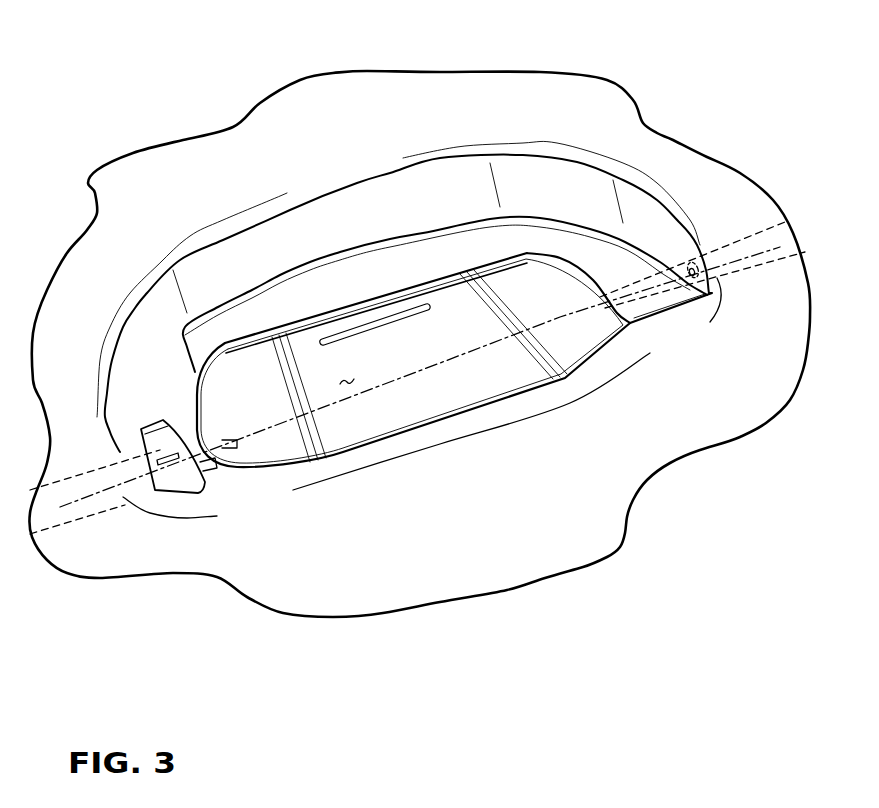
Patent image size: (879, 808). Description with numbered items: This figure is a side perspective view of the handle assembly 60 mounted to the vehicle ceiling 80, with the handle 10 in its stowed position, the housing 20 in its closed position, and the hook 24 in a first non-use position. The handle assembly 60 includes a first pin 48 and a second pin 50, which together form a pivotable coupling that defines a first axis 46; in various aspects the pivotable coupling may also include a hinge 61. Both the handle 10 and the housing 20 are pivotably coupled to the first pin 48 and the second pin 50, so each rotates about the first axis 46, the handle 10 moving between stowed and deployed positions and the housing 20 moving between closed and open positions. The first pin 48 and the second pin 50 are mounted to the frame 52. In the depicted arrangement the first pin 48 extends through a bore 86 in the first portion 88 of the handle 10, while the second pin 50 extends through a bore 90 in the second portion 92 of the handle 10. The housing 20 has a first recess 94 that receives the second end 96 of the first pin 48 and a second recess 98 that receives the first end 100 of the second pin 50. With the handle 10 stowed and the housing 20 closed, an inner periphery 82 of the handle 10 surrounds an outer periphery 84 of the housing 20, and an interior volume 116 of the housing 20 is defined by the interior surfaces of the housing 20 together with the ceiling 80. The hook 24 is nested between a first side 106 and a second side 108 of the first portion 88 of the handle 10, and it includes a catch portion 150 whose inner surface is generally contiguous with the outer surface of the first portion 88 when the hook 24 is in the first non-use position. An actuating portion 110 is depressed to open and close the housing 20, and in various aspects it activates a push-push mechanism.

The handle 10 is at (370, 210).
The housing 20 is at (453, 387).
The hook 24 is at (187, 488).
The first axis 46 is at (110, 485).
The first pin 48 is at (213, 470).
The second pin 50 is at (640, 297).
The frame 52 is at (70, 465).
The handle assembly 60 is at (141, 260).
The hinge 61 is at (747, 214).
The ceiling 80 is at (452, 540).
The inner periphery 82 is at (481, 255).
The outer periphery 84 is at (528, 256).
The bore 86 is at (140, 515).
The first portion 88 is at (108, 458).
The bore 90 is at (724, 246).
The second portion 92 is at (669, 300).
The first recess 94 is at (251, 470).
The second end 96 is at (251, 470).
The second recess 98 is at (635, 395).
The first end 100 is at (635, 395).
The first side 106 is at (126, 460).
The second side 108 is at (160, 422).
The actuating portion 110 is at (380, 318).
The interior volume 116 is at (346, 390).
The catch portion 150 is at (160, 418).